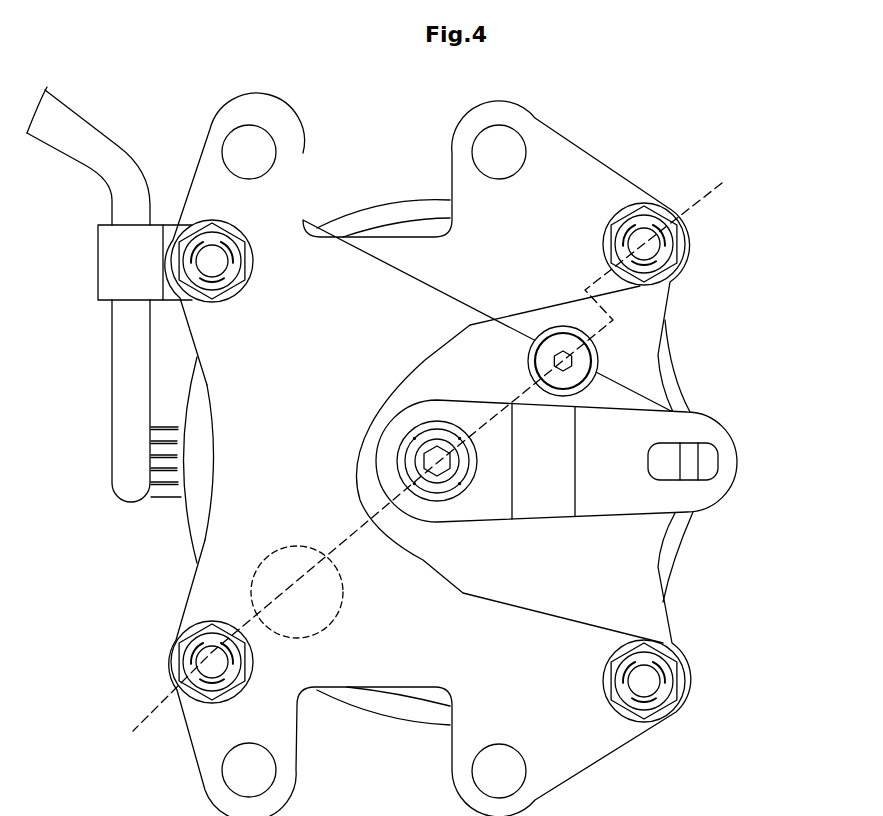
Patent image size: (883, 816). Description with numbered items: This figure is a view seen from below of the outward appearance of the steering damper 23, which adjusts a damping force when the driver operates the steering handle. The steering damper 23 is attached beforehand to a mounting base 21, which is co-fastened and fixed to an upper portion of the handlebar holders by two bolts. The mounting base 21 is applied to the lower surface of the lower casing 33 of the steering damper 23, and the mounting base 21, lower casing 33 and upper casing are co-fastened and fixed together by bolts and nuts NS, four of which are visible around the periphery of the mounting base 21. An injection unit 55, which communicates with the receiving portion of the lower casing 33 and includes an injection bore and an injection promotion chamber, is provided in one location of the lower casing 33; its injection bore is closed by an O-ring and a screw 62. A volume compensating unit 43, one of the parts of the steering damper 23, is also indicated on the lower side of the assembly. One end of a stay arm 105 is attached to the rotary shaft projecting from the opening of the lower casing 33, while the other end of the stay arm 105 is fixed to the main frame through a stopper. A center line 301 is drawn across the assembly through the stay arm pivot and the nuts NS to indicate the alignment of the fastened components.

The mounting base 21 is at (628, 162).
The steering damper 23 is at (805, 361).
The lower casing 33 is at (673, 612).
The volume compensating unit 43 is at (250, 589).
The injection unit 55 is at (605, 349).
The screw 62 is at (578, 373).
The stay arm 105 is at (739, 462).
The center line 301 is at (722, 183).
The nut NS is at (197, 236).